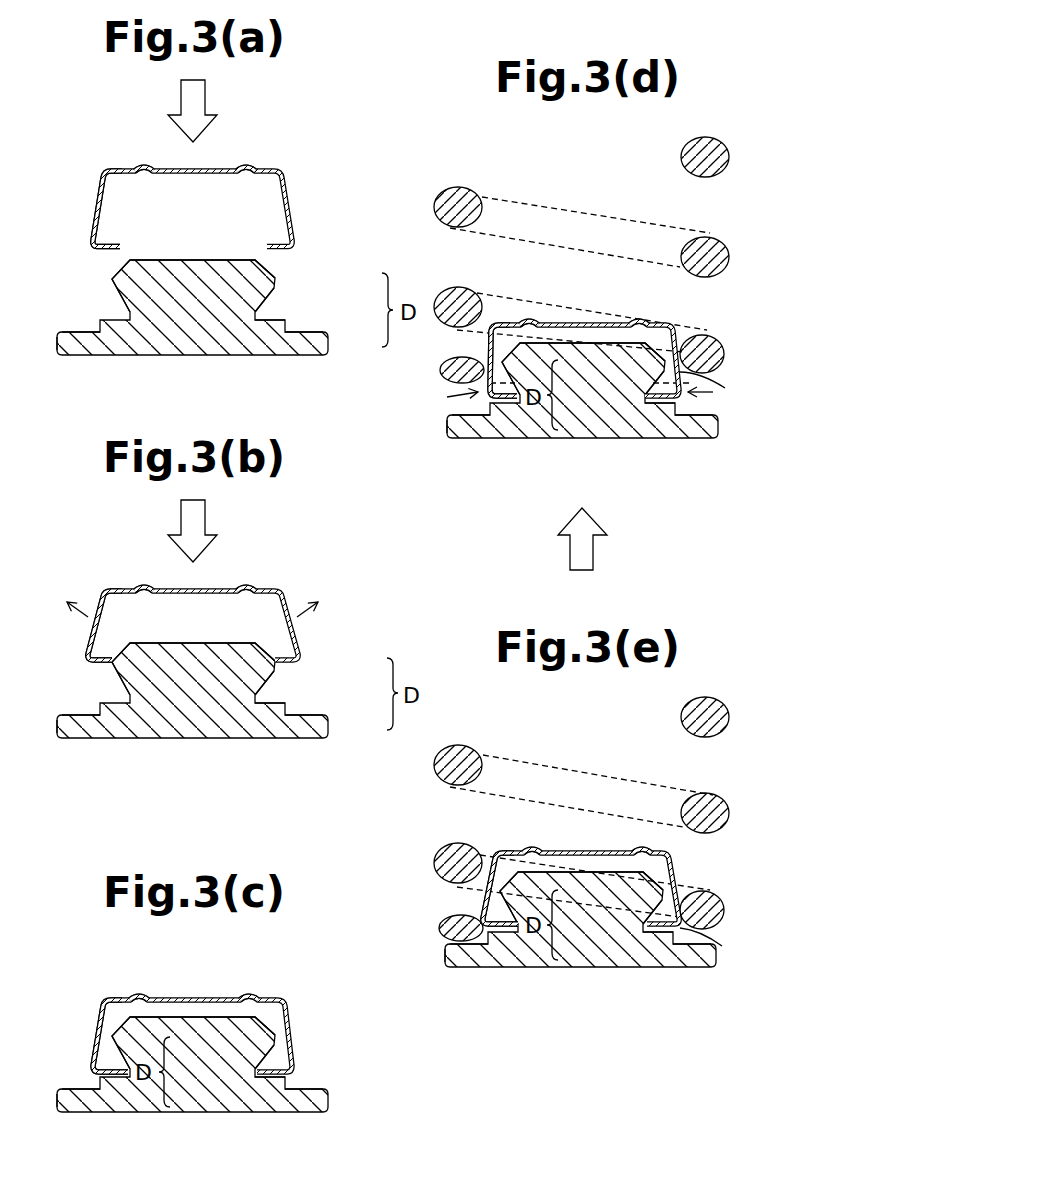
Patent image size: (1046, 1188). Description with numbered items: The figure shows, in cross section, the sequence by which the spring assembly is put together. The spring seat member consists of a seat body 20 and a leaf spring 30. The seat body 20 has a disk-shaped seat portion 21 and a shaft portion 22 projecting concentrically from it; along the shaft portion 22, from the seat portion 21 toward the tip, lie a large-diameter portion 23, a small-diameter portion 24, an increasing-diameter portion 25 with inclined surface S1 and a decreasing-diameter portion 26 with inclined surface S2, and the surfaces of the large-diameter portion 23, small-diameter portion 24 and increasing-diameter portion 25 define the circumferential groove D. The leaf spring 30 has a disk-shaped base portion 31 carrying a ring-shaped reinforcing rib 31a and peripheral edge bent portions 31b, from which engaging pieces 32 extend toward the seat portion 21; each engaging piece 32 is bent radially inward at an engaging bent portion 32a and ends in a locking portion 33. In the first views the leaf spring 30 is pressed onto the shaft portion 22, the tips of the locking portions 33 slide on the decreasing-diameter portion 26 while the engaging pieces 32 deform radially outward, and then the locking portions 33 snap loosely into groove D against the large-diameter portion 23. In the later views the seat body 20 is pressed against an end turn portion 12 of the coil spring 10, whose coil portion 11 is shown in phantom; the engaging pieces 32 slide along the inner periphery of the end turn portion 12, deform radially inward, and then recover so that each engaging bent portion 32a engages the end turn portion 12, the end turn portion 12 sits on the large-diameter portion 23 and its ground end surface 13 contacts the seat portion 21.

In FIG. 3D, the coil spring 10 is at (599, 261).
In FIG. 3E, the coil spring 10 is at (597, 832).
In FIG. 3D, the coil portion 11 is at (554, 303).
In FIG. 3E, the coil portion 11 is at (487, 857).
In FIG. 3D, the end turn portion 12 is at (710, 376).
In FIG. 3E, the end turn portion 12 is at (710, 937).
In FIG. 3D, the ground end surface 13 is at (717, 385).
In FIG. 3E, the ground end surface 13 is at (720, 948).
In FIG. 3A, the seat body 20 is at (202, 358).
In FIG. 3B, the seat body 20 is at (202, 742).
In FIG. 3C, the seat body 20 is at (192, 1116).
In FIG. 3D, the seat body 20 is at (585, 444).
In FIG. 3E, the seat body 20 is at (585, 972).
In FIG. 3A, the seat portion 21 is at (82, 353).
In FIG. 3B, the seat portion 21 is at (80, 737).
In FIG. 3C, the seat portion 21 is at (80, 1113).
In FIG. 3D, the seat portion 21 is at (465, 439).
In FIG. 3E, the seat portion 21 is at (467, 968).
In FIG. 3A, the shaft portion 22 is at (113, 280).
In FIG. 3B, the shaft portion 22 is at (173, 647).
In FIG. 3C, the shaft portion 22 is at (173, 1020).
In FIG. 3D, the shaft portion 22 is at (543, 352).
In FIG. 3E, the shaft portion 22 is at (565, 877).
In FIG. 3A, the large-diameter portion 23 is at (288, 329).
In FIG. 3B, the large-diameter portion 23 is at (288, 710).
In FIG. 3C, the large-diameter portion 23 is at (287, 1090).
In FIG. 3D, the large-diameter portion 23 is at (677, 416).
In FIG. 3E, the large-diameter portion 23 is at (675, 945).
In FIG. 3A, the small-diameter portion 24 is at (262, 317).
In FIG. 3B, the small-diameter portion 24 is at (262, 700).
In FIG. 3C, the small-diameter portion 24 is at (263, 1083).
In FIG. 3D, the small-diameter portion 24 is at (653, 405).
In FIG. 3E, the small-diameter portion 24 is at (651, 933).
In FIG. 3A, the increasing-diameter portion 25 is at (271, 300).
In FIG. 3B, the increasing-diameter portion 25 is at (279, 676).
In FIG. 3C, the increasing-diameter portion 25 is at (270, 1054).
In FIG. 3D, the increasing-diameter portion 25 is at (661, 379).
In FIG. 3E, the increasing-diameter portion 25 is at (660, 909).
In FIG. 3A, the decreasing-diameter portion 26 is at (267, 269).
In FIG. 3B, the decreasing-diameter portion 26 is at (267, 645).
In FIG. 3C, the decreasing-diameter portion 26 is at (271, 1029).
In FIG. 3D, the decreasing-diameter portion 26 is at (681, 336).
In FIG. 3E, the decreasing-diameter portion 26 is at (679, 885).
In FIG. 3A, the leaf spring 30 is at (229, 156).
In FIG. 3B, the leaf spring 30 is at (229, 576).
In FIG. 3C, the leaf spring 30 is at (229, 984).
In FIG. 3D, the leaf spring 30 is at (604, 322).
In FIG. 3E, the leaf spring 30 is at (586, 841).
In FIG. 3A, the base portion 31 is at (262, 167).
In FIG. 3B, the base portion 31 is at (262, 588).
In FIG. 3C, the base portion 31 is at (262, 996).
In FIG. 3D, the base portion 31 is at (640, 252).
In FIG. 3E, the base portion 31 is at (596, 845).
In FIG. 3A, the reinforcing rib 31a is at (143, 167).
In FIG. 3B, the reinforcing rib 31a is at (143, 587).
In FIG. 3C, the reinforcing rib 31a is at (139, 996).
In FIG. 3D, the reinforcing rib 31a is at (627, 258).
In FIG. 3E, the reinforcing rib 31a is at (641, 845).
In FIG. 3A, the peripheral edge bent portion 31b is at (106, 171).
In FIG. 3B, the peripheral edge bent portion 31b is at (108, 590).
In FIG. 3C, the peripheral edge bent portion 31b is at (104, 1001).
In FIG. 3D, the peripheral edge bent portion 31b is at (496, 321).
In FIG. 3E, the peripheral edge bent portion 31b is at (492, 850).
In FIG. 3A, the engaging piece 32 is at (96, 196).
In FIG. 3B, the engaging piece 32 is at (91, 630).
In FIG. 3C, the engaging piece 32 is at (98, 1032).
In FIG. 3D, the engaging piece 32 is at (488, 338).
In FIG. 3E, the engaging piece 32 is at (494, 895).
In FIG. 3A, the engaging bent portion 32a is at (92, 238).
In FIG. 3B, the engaging bent portion 32a is at (87, 659).
In FIG. 3C, the engaging bent portion 32a is at (93, 1062).
In FIG. 3D, the engaging bent portion 32a is at (448, 404).
In FIG. 3E, the engaging bent portion 32a is at (482, 924).
In FIG. 3A, the locking portion 33 is at (102, 251).
In FIG. 3B, the locking portion 33 is at (108, 670).
In FIG. 3C, the locking portion 33 is at (102, 1077).
In FIG. 3D, the locking portion 33 is at (497, 403).
In FIG. 3E, the locking portion 33 is at (493, 935).